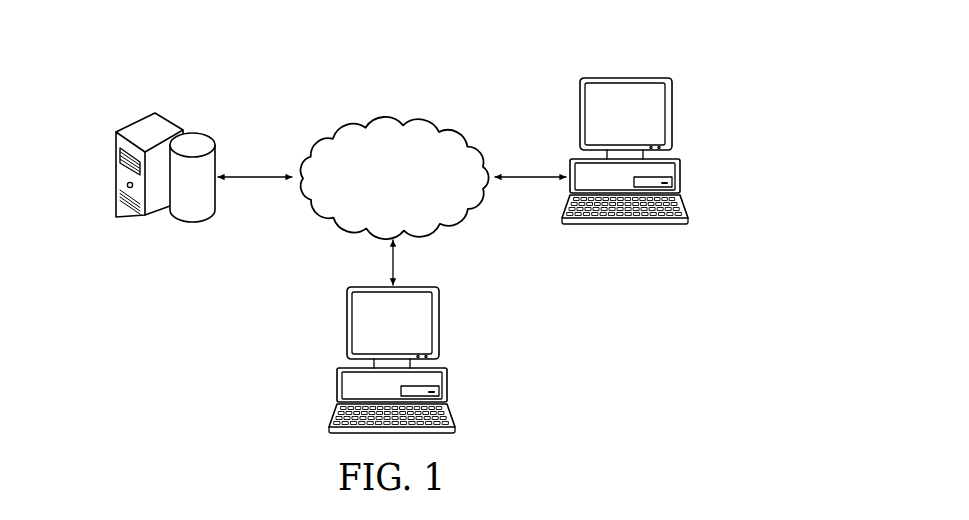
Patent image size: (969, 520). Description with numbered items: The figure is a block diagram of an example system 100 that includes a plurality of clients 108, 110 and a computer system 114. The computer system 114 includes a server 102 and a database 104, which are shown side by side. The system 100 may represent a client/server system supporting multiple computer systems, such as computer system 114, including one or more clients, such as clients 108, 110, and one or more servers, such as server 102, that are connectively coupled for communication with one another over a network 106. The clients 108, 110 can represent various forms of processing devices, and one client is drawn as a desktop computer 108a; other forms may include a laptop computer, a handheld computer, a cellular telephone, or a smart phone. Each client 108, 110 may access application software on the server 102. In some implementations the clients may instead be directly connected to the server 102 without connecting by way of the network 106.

The system 100 is at (495, 63).
The computer system 114 is at (118, 92).
The server 102 is at (118, 165).
The database 104 is at (191, 133).
The network 106 is at (362, 122).
The client 108 is at (682, 177).
The desktop computer 108a is at (664, 113).
The client 110 is at (338, 387).